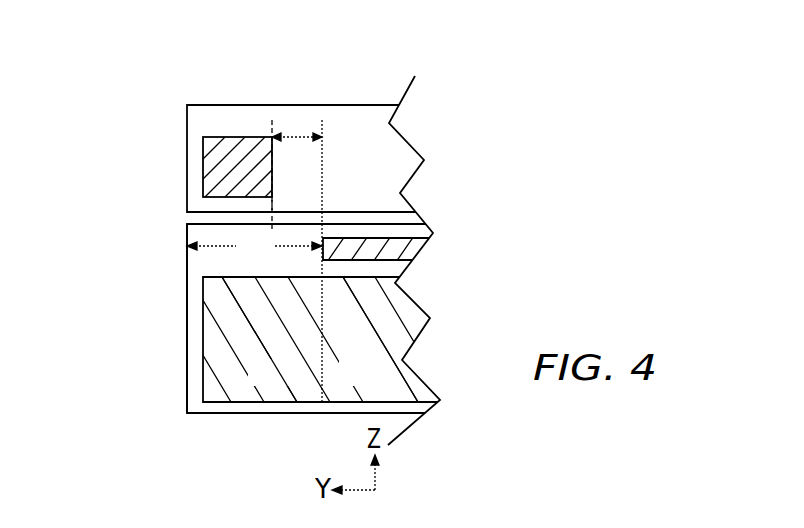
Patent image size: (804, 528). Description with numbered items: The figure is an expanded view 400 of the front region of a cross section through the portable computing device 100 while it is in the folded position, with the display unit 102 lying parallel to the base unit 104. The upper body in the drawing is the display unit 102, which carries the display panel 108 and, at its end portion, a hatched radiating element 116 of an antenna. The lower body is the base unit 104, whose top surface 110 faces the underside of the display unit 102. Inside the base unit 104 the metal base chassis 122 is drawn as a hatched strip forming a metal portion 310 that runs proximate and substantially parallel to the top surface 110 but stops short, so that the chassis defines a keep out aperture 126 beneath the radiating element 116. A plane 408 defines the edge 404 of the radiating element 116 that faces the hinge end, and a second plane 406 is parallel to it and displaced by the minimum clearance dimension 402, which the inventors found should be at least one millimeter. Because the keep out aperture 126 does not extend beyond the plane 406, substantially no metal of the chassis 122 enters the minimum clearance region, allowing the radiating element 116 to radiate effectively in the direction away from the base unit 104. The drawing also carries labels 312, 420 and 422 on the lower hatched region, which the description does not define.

The portable computing device 100 is at (208, 417).
The display unit 102 is at (380, 103).
The base unit 104 is at (260, 417).
The display panel 108 is at (338, 212).
The top surface of the base unit 110 is at (410, 215).
The radiating element 116 is at (203, 150).
The metal base chassis 122 is at (431, 233).
The keep out aperture 126 is at (254, 248).
The metal portion 310 is at (397, 262).
The hatched body region 312 is at (203, 330).
The expanded view 400 is at (128, 218).
The minimum clearance dimension 402 is at (302, 137).
The edge of the radiating element 404 is at (273, 194).
The plane 406 is at (322, 157).
The plane 408 is at (273, 156).
The first region 420 is at (287, 385).
The second region 422 is at (378, 385).